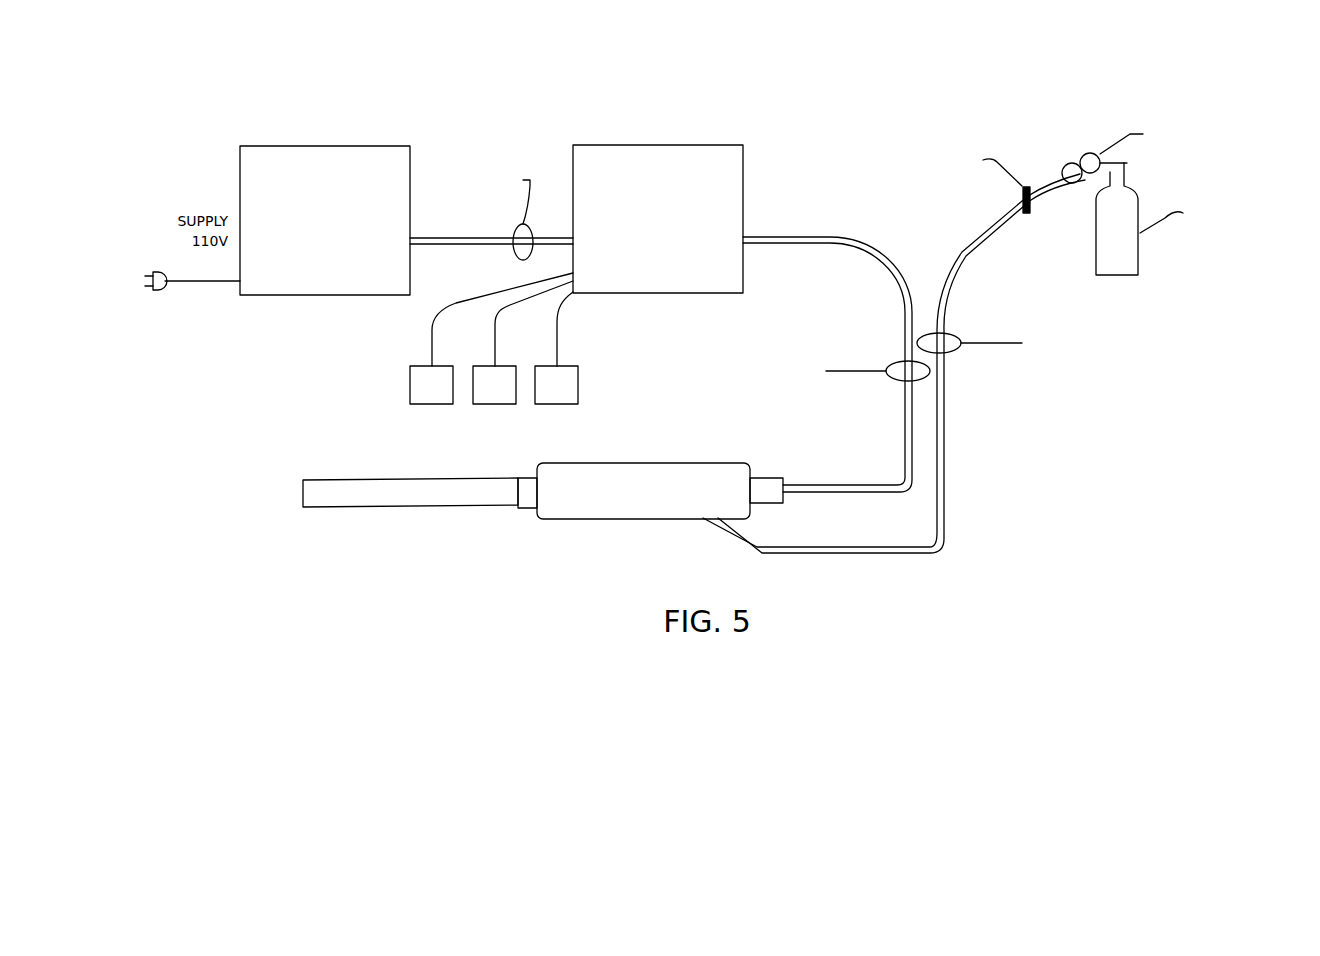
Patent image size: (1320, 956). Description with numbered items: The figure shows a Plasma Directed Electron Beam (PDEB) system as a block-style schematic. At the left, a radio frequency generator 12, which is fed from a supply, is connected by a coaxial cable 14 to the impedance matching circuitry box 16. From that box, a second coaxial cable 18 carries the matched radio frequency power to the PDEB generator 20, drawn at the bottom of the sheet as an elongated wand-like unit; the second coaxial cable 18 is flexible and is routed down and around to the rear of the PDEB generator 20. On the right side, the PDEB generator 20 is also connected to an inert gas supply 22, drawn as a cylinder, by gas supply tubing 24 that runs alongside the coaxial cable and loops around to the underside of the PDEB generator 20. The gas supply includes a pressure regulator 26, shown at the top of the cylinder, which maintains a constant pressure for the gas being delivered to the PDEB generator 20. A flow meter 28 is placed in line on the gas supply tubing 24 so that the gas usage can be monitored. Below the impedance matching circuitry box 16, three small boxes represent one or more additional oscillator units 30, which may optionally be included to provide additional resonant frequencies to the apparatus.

The radio frequency generator 12 is at (387, 178).
The coaxial cable 14 is at (492, 247).
The impedance matching circuitry box 16 is at (700, 176).
The second coaxial cable 18 is at (817, 237).
The PDEB generator 20 is at (668, 462).
The inert gas supply 22 is at (1083, 157).
The gas supply tubing 24 is at (997, 243).
The pressure regulator 26 is at (1128, 185).
The flow meter 28 is at (1022, 208).
The additional oscillator units 30 is at (437, 364).